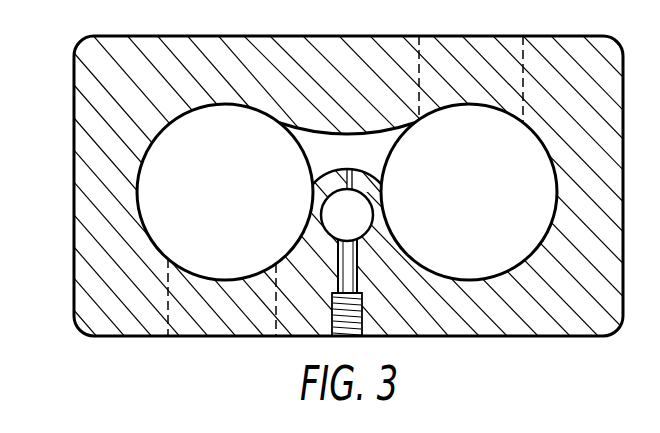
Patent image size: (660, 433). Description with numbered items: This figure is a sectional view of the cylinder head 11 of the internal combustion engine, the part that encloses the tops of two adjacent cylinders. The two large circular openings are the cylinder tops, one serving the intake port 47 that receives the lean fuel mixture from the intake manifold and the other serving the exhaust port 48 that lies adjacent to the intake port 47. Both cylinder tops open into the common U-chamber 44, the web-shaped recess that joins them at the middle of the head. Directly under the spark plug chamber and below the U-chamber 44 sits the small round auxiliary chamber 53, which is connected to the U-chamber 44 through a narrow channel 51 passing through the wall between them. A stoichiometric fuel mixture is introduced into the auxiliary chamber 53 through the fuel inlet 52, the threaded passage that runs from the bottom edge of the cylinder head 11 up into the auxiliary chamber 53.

The cylinder head 11 is at (74, 247).
The intake port 47 is at (208, 287).
The exhaust port 48 is at (448, 89).
The U-chamber 44 is at (356, 165).
The channel 51 is at (362, 187).
The auxiliary chamber 53 is at (357, 226).
The fuel inlet 52 is at (352, 322).